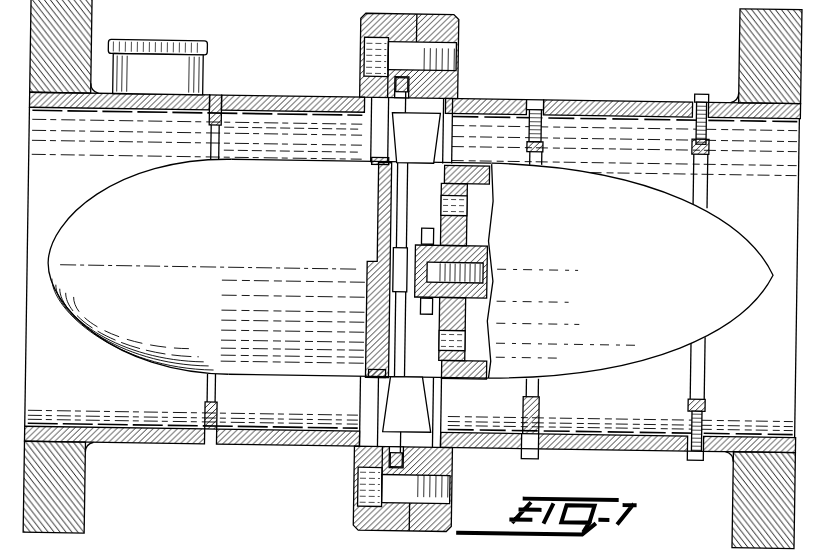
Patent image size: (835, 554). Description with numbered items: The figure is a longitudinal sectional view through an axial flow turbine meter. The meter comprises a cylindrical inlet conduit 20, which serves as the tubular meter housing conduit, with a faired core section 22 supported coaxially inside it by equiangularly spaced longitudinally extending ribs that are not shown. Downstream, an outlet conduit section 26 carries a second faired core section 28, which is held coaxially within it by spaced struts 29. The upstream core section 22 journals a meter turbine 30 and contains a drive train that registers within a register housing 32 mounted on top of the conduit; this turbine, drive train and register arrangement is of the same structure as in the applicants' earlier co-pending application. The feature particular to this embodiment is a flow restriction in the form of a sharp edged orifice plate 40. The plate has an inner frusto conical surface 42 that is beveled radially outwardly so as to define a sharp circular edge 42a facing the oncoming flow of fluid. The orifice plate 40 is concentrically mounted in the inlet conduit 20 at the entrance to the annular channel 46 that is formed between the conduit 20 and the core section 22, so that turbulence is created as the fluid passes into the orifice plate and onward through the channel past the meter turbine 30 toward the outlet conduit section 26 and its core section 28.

The cylindrical inlet conduit 20 is at (320, 100).
The faired core section 22 is at (106, 187).
The outlet conduit section 26 is at (633, 103).
The faired core section 28 is at (736, 243).
The struts 29 is at (710, 166).
The meter turbine 30 is at (453, 144).
The register housing 32 is at (182, 30).
The sharp edged orifice plate 40 is at (221, 124).
The inner frusto conical surface 42 is at (225, 405).
The sharp circular edge 42a is at (208, 409).
The annular channel 46 is at (258, 125).